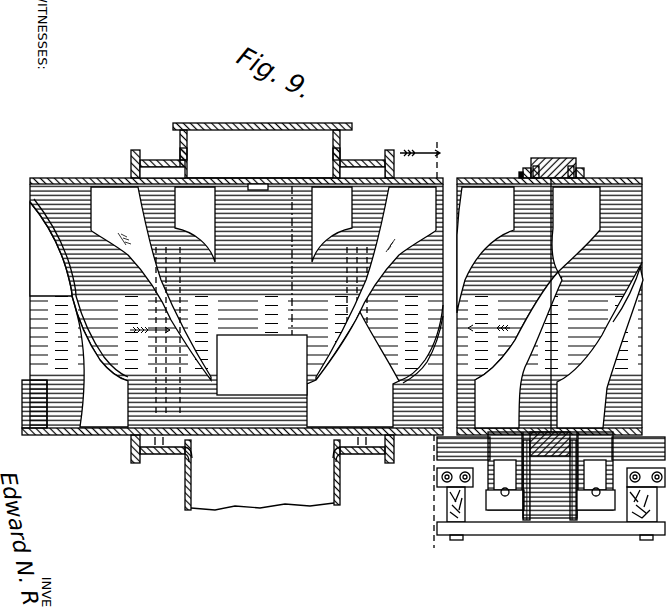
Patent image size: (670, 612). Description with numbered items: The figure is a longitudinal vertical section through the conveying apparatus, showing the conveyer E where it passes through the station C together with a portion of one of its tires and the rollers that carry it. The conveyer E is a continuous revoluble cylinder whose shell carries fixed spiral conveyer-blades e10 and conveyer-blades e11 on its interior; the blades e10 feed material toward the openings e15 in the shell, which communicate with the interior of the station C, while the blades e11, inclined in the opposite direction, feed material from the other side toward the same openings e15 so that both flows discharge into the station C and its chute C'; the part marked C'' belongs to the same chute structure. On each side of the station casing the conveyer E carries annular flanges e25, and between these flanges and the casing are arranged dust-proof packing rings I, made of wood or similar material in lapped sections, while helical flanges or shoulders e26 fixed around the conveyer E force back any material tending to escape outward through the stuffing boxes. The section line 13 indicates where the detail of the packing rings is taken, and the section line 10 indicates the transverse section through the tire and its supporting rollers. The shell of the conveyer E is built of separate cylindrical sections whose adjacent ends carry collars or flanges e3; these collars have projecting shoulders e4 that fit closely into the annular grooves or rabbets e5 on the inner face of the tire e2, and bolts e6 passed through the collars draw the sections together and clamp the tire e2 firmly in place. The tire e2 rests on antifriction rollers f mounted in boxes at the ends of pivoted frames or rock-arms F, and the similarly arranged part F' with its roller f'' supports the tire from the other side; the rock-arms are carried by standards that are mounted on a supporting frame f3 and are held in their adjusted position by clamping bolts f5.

The conveyer E is at (60, 178).
The conveyer-blades e11 is at (120, 307).
The conveyer-blades e10 is at (475, 307).
The section line 13 is at (390, 150).
The openings e15 is at (255, 186).
The station C is at (262, 283).
The chute C' is at (262, 311).
The lower pipe C'' is at (262, 486).
The annular flanges e25 is at (264, 295).
The helical flanges or shoulders e26 is at (186, 158).
The packing rings I is at (140, 170).
The section line 10 is at (430, 346).
The tires e2 is at (550, 473).
The annular grooves or rabbets e5 is at (586, 146).
The projecting shoulders e4 is at (586, 162).
The bolts e6 is at (522, 173).
The collars or flanges e3 is at (584, 174).
The frames or rock-arms F is at (480, 495).
The antifriction rollers f is at (550, 495).
The bracket F' is at (621, 495).
The bearing f'' is at (641, 509).
The clamping bolts f5 is at (447, 480).
The supporting frame f3 is at (452, 500).